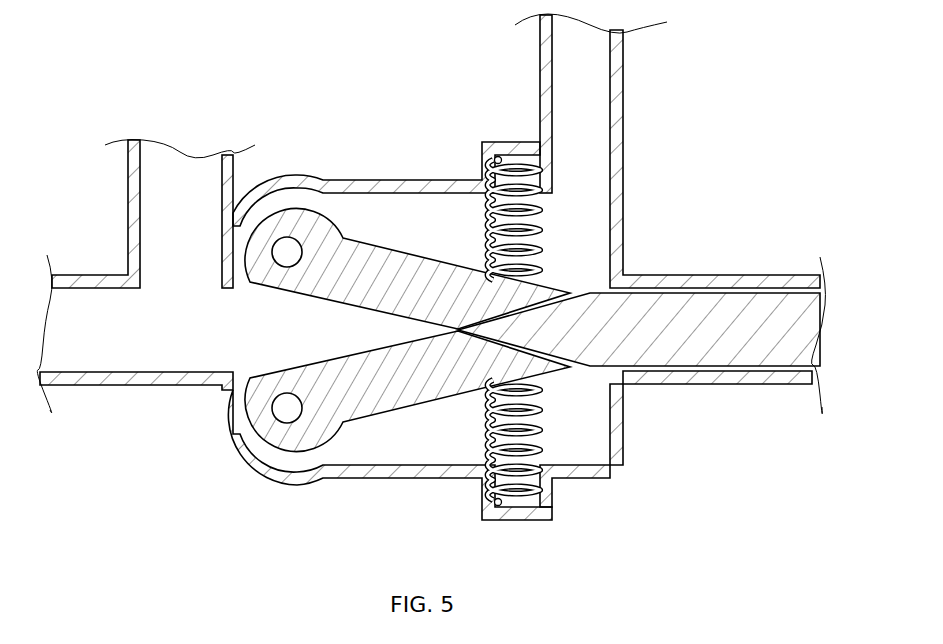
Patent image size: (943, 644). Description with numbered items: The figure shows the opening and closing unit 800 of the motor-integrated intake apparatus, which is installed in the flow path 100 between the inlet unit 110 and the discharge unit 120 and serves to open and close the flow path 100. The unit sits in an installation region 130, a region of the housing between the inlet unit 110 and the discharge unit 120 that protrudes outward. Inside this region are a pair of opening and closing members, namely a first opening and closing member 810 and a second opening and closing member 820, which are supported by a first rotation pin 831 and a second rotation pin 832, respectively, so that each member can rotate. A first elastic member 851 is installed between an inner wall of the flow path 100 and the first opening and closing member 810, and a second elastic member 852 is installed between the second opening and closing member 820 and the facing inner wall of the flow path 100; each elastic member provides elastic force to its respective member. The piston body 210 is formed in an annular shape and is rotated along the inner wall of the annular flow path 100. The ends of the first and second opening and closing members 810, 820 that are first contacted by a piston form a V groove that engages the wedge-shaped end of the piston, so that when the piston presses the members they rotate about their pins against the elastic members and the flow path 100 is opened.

The opening and closing unit 800 is at (111, 46).
The flow path 100 is at (123, 336).
The inlet unit 110 is at (134, 193).
The discharge unit 120 is at (617, 80).
The installation region 130 is at (345, 190).
The piston body 210 is at (700, 338).
The first opening and closing member 810 is at (342, 275).
The second opening and closing member 820 is at (387, 383).
The first rotation pin 831 is at (287, 256).
The second rotation pin 832 is at (288, 410).
The first elastic member 851 is at (530, 222).
The second elastic member 852 is at (528, 487).